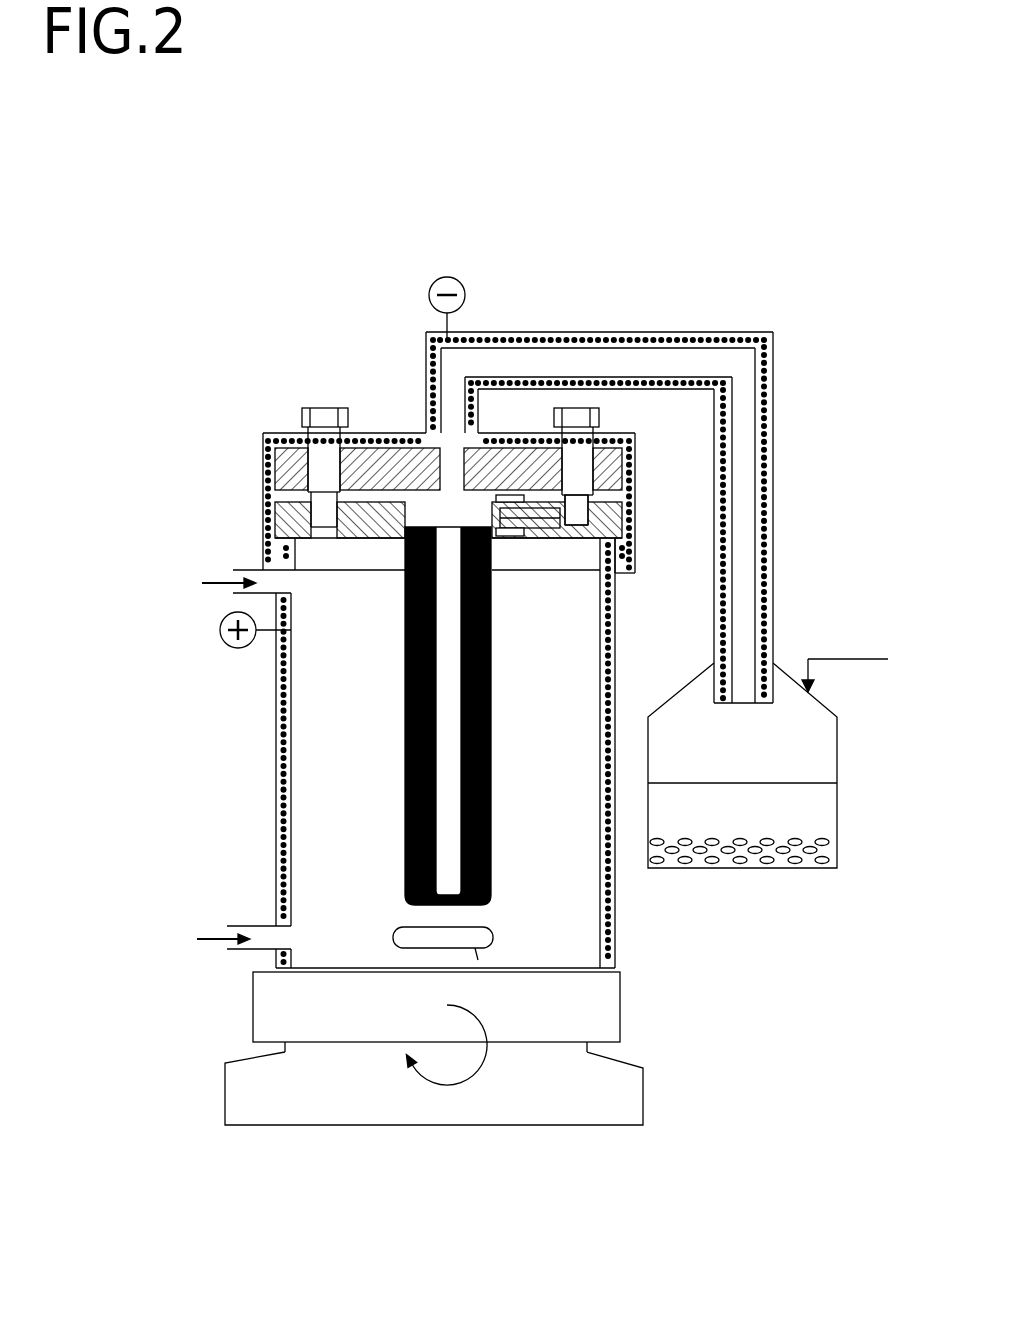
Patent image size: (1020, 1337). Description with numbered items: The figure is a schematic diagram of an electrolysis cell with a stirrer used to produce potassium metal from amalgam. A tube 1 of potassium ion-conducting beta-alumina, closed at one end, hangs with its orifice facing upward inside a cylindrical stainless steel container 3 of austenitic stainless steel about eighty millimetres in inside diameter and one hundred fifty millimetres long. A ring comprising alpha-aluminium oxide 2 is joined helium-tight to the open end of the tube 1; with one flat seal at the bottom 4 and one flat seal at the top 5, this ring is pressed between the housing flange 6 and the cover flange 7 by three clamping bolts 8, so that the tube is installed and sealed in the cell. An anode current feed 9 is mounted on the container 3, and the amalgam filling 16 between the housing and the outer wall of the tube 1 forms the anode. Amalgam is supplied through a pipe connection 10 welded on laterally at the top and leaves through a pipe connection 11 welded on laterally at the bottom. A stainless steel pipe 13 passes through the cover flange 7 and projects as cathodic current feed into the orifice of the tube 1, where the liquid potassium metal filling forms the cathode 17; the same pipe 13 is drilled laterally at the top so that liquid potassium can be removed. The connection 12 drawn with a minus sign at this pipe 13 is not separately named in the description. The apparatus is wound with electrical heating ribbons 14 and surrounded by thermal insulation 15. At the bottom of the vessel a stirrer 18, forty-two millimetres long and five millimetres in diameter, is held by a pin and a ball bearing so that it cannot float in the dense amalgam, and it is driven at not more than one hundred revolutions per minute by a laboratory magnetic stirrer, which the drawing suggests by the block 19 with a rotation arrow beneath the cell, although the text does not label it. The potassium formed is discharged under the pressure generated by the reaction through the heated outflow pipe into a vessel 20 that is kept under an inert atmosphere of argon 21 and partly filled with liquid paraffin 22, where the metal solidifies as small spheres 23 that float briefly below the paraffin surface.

The tube 1 is at (488, 825).
The ring comprising alpha-aluminium oxide 2 is at (522, 512).
The cylindrical stainless steel container 3 is at (615, 636).
The flat seal at the bottom 4 is at (523, 522).
The flat seal at the top 5 is at (522, 497).
The housing flange 6 is at (285, 521).
The cover flange 7 is at (285, 463).
The clamping bolts 8 is at (320, 408).
The anode current feed 9 is at (225, 643).
The pipe connection 10 is at (238, 593).
The pipe connection 11 is at (235, 950).
The negative terminal 12 is at (463, 282).
The stainless steel pipe 13 is at (545, 337).
The electrical heating ribbons 14 is at (278, 850).
The thermal insulation 15 is at (612, 930).
The amalgam filling 16 is at (353, 940).
The cathode 17 is at (480, 903).
The stirrer 18 is at (475, 948).
The base 19 is at (537, 1108).
The vessel 20 is at (837, 870).
The argon 21 is at (845, 657).
The liquid paraffin 22 is at (812, 800).
The small spheres 23 is at (768, 865).